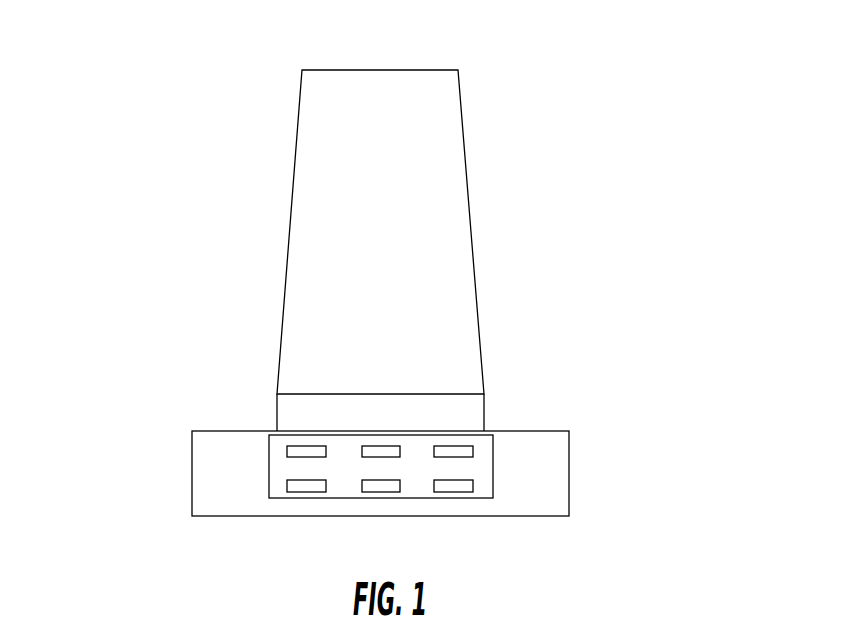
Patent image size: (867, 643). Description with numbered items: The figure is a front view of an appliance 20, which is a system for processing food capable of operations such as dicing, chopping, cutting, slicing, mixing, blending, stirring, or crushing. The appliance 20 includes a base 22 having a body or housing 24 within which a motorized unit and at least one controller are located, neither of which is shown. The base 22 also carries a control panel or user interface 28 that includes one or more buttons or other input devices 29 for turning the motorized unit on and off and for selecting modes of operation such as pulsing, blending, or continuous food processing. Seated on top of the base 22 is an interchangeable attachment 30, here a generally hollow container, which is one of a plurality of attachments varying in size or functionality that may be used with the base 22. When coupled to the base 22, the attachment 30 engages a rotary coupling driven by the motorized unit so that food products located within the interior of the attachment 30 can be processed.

The appliance 20 is at (147, 166).
The base 22 is at (632, 453).
The body or housing 24 is at (208, 477).
The control panel or user interface 28 is at (484, 467).
The buttons or other input devices 29 is at (308, 452).
The interchangeable attachment 30 is at (495, 147).